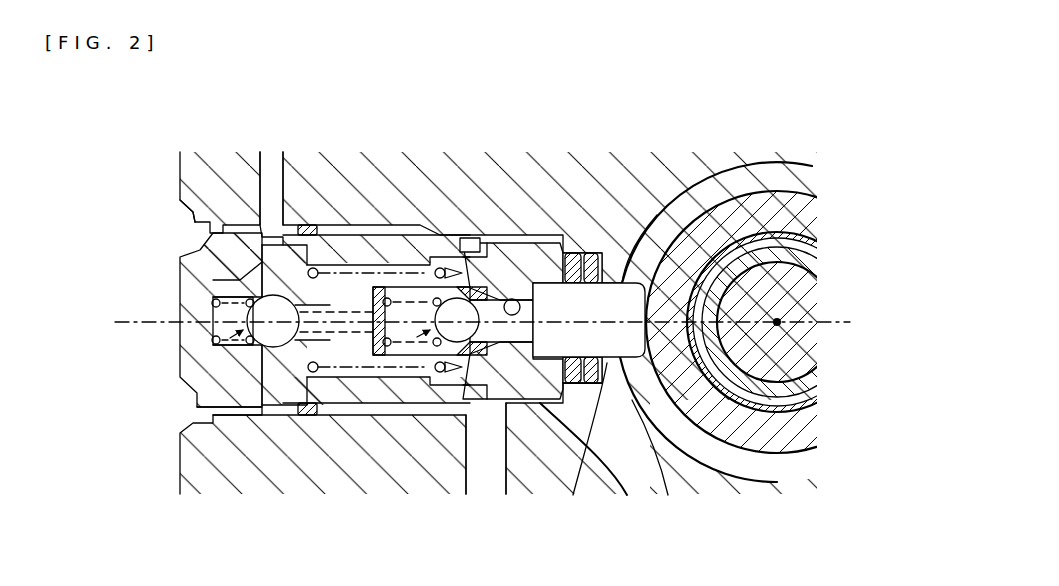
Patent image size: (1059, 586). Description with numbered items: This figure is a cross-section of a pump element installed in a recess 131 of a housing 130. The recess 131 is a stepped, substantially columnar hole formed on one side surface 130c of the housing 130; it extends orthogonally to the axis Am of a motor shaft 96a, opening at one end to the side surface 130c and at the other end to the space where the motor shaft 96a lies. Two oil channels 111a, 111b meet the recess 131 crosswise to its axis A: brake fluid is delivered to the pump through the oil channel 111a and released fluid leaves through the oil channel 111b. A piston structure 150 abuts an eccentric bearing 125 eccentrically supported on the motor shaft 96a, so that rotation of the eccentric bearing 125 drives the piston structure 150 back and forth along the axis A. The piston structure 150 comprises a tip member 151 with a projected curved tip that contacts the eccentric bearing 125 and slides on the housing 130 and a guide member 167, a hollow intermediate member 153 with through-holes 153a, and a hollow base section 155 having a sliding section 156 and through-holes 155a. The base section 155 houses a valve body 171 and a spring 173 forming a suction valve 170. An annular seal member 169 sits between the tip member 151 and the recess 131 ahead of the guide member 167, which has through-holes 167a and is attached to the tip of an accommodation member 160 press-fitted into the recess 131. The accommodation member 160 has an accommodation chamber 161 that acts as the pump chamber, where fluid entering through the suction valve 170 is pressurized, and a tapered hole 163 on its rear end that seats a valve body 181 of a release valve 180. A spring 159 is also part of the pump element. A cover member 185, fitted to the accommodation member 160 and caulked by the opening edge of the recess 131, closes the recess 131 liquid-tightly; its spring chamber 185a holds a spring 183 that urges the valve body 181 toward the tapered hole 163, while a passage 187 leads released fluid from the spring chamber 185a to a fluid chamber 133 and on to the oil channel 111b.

The eccentric bearing 125 is at (718, 210).
The motor shaft 96a is at (770, 365).
The axis of the recess A is at (491, 323).
The axis of the motor shaft Am is at (780, 323).
The housing 130 is at (297, 203).
The side surface of the housing 130c is at (178, 183).
The recess 131 is at (348, 425).
The fluid chamber 133 is at (272, 226).
The oil channel 111a is at (490, 468).
The oil channel 111b is at (268, 176).
The piston structure 150 is at (578, 232).
The tip member 151 is at (657, 215).
The intermediate member 153 is at (528, 258).
The through-hole 153a is at (580, 425).
The base section 155 is at (517, 262).
The through-hole 155a is at (473, 243).
The sliding section 156 is at (448, 398).
The spring 159 is at (354, 272).
The accommodation member 160 is at (420, 262).
The accommodation chamber 161 is at (282, 375).
The tapered hole 163 is at (258, 390).
The guide member 167 is at (632, 435).
The through-hole 167a is at (548, 405).
The annular seal member 169 is at (588, 260).
The suction valve 170 is at (405, 357).
The valve body 171 is at (450, 335).
The spring 173 is at (368, 350).
The release valve 180 is at (232, 380).
The valve body 181 is at (254, 302).
The spring 183 is at (235, 294).
The cover member 185 is at (190, 367).
The spring chamber 185a is at (210, 330).
The passage 187 is at (253, 272).